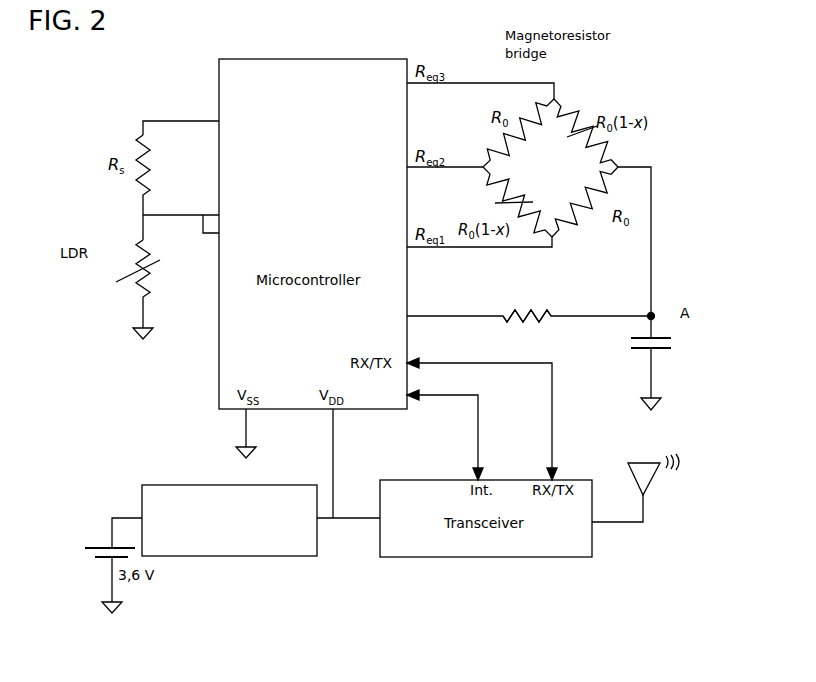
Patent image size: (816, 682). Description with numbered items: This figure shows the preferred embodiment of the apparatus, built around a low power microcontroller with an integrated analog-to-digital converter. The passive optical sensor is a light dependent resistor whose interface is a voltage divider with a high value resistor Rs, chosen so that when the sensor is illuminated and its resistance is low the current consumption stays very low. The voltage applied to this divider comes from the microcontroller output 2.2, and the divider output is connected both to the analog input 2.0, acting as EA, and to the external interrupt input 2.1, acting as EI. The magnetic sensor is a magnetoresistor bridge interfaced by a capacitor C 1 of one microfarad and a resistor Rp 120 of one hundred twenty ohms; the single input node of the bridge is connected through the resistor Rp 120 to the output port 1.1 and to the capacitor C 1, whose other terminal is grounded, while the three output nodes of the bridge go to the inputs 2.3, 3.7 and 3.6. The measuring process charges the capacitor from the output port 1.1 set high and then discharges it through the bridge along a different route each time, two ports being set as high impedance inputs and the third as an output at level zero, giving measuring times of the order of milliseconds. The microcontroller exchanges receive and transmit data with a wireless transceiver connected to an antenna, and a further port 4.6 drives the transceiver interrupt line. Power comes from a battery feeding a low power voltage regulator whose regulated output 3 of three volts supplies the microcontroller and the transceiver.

The output P2.2 2.2 is at (202, 125).
The analog input P2.0 2.0 is at (237, 217).
The external interrupt input P2.1 2.1 is at (258, 231).
The input P2.3 2.3 is at (460, 86).
The input P3.7 3.7 is at (424, 165).
The input P3.6 3.6 is at (459, 246).
The output port P1.1 1.1 is at (509, 315).
The port P4.6 4.6 is at (424, 433).
The resistor Rp value of 120 ohms 120 is at (528, 303).
The capacitor C value of 1 microfarad 1 is at (682, 346).
The 3 V voltage regulator output 3 is at (251, 520).